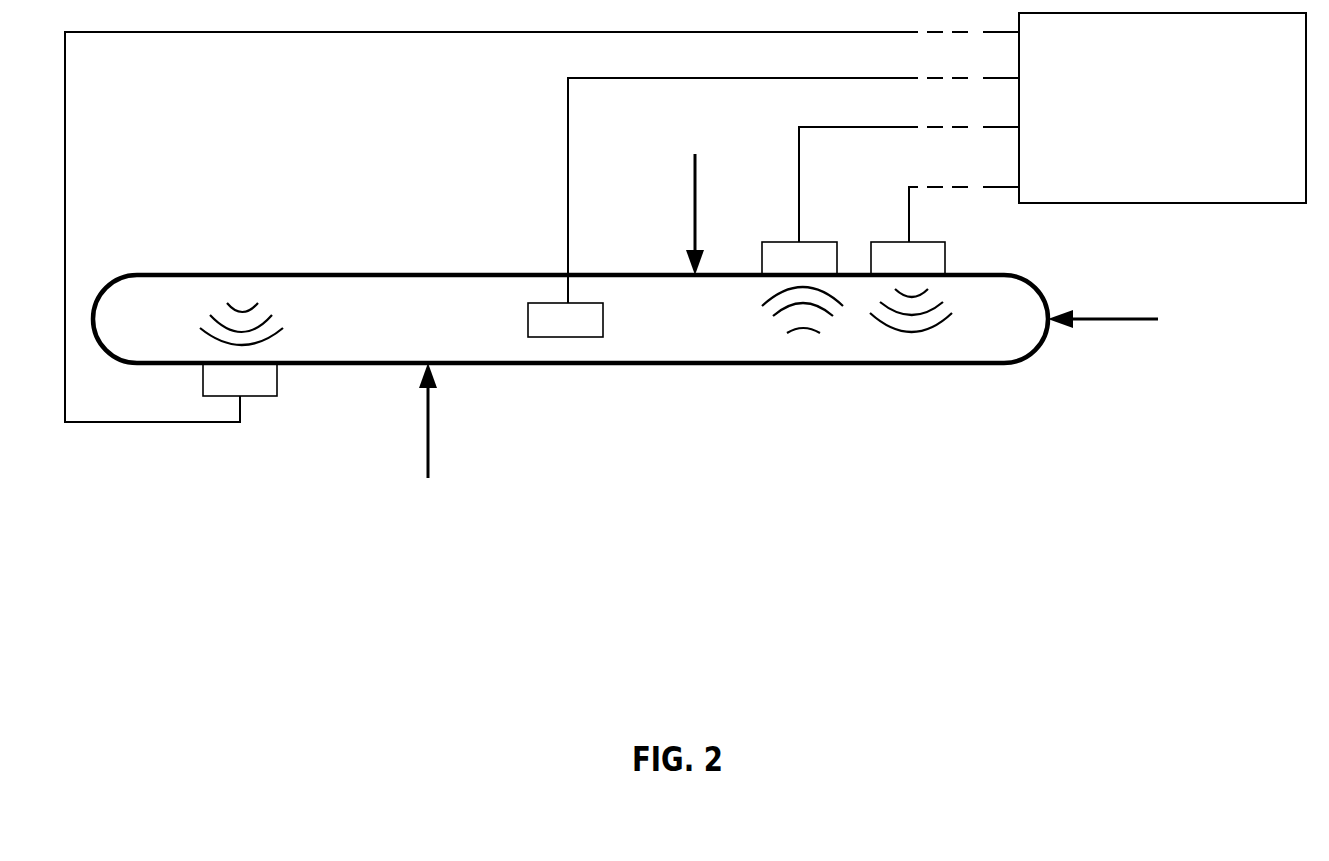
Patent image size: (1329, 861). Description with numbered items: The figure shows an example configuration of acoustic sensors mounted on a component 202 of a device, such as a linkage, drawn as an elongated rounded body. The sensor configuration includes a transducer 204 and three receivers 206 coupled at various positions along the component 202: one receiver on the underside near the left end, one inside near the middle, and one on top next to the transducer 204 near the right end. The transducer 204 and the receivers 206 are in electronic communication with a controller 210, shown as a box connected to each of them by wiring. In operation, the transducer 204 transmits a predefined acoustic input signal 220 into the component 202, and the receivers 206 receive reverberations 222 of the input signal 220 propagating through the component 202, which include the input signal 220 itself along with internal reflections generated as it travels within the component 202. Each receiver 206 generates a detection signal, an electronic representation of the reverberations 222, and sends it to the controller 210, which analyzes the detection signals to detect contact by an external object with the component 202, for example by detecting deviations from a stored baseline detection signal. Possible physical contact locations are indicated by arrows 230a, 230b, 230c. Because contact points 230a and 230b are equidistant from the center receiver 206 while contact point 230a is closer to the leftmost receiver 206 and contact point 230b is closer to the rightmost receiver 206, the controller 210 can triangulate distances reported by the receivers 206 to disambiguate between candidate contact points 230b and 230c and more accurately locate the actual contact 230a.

The component 202 is at (143, 275).
The transducer 204 is at (945, 250).
The receivers 206 is at (265, 395).
The controller 210 is at (1162, 108).
The acoustic input signal 220 is at (941, 340).
The reverberations 222 is at (291, 305).
The contact location 230a is at (428, 453).
The contact location 230b is at (695, 197).
The contact location 230c is at (1130, 322).